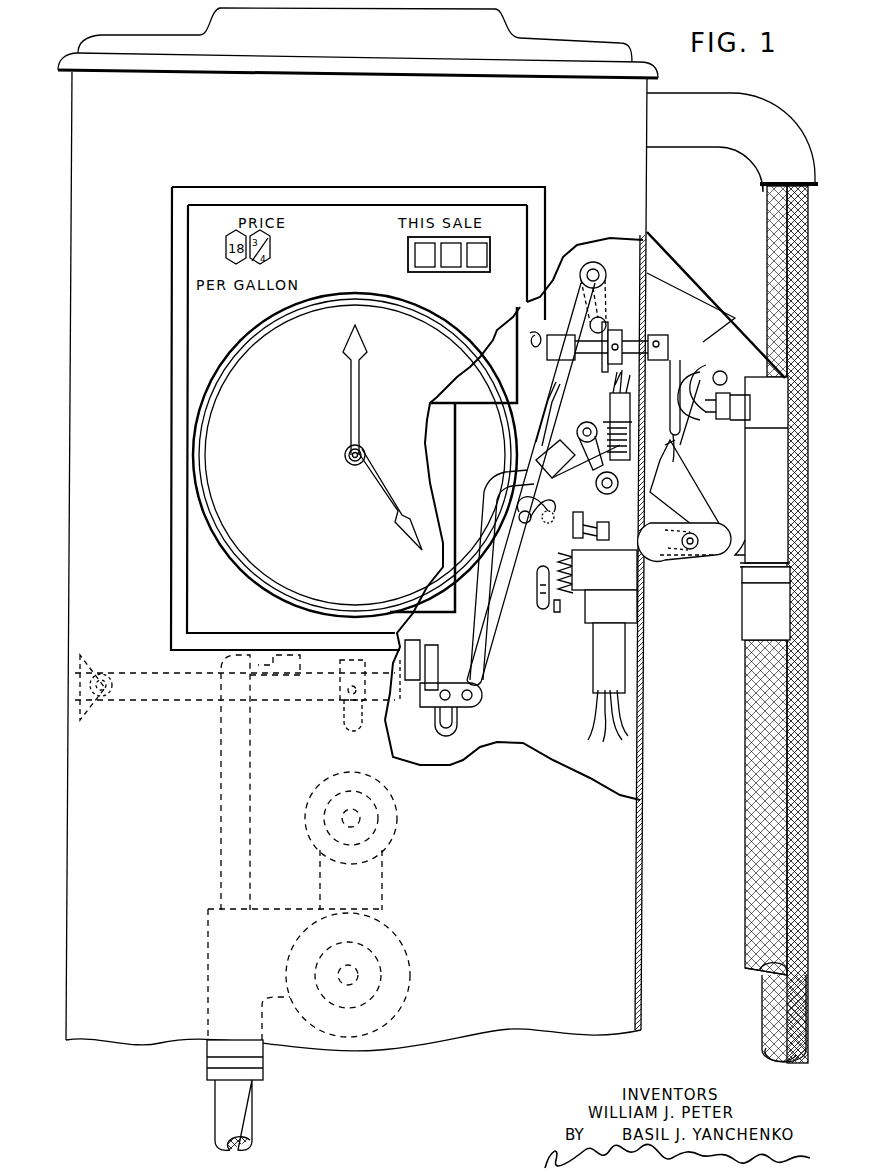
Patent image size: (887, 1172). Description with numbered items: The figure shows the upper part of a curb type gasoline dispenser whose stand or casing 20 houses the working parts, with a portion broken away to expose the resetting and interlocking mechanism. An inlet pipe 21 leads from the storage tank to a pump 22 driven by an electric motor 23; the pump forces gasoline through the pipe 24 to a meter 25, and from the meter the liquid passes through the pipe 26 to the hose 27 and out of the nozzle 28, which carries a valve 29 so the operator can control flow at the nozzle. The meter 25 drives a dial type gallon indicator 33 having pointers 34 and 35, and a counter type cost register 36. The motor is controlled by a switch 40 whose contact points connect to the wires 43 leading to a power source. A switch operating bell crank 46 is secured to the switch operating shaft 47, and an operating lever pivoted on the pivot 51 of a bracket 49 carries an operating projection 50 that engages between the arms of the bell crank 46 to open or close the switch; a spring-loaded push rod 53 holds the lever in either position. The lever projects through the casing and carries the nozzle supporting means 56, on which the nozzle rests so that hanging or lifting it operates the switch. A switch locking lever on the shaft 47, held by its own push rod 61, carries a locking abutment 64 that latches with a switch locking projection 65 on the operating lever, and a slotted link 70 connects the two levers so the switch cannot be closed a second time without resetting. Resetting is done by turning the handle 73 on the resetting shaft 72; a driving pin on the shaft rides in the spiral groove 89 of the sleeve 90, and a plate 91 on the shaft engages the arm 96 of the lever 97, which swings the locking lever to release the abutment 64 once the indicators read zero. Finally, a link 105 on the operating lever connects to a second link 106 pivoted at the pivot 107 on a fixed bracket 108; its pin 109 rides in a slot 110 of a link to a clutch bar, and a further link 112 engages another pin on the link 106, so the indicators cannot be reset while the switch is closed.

The casing 20 is at (640, 690).
The inlet pipe 21 is at (225, 1110).
The pump 22 is at (375, 1025).
The electric motor 23 is at (395, 830).
The pipe 24 is at (220, 765).
The meter 25 is at (400, 702).
The pipe 26 is at (711, 140).
The hose 27 is at (755, 745).
The nozzle 28 is at (700, 300).
The valve 29 is at (740, 418).
The gallon indicator 33 is at (262, 548).
The pointer 34 is at (380, 490).
The pointer 35 is at (368, 357).
The cost register 36 is at (410, 250).
The switch 40 is at (592, 590).
The wires 43 is at (598, 712).
The switch operating bell crank 46 is at (531, 573).
The switch operating shaft 47 is at (535, 532).
The bracket 49 is at (620, 496).
The operating projection 50 is at (592, 485).
The pivot 51 is at (606, 474).
The push rod 53 is at (616, 420).
The nozzle supporting means 56 is at (705, 542).
The push rod 61 is at (555, 605).
The locking abutment 64 is at (620, 545).
The switch locking projection 65 is at (598, 538).
The link 70 is at (535, 463).
The resetting shaft 72 is at (648, 348).
The handle 73 is at (666, 395).
The spiral groove 89 is at (553, 360).
The sleeve 90 is at (528, 340).
The plate 91 is at (609, 330).
The arm 96 is at (598, 310).
The lever 97 is at (560, 400).
The link 105 is at (482, 650).
The link 106 is at (166, 698).
The pivot 107 is at (106, 672).
The bracket 108 is at (100, 660).
The pin 109 is at (338, 690).
The slot 110 is at (342, 724).
The link 112 is at (462, 725).